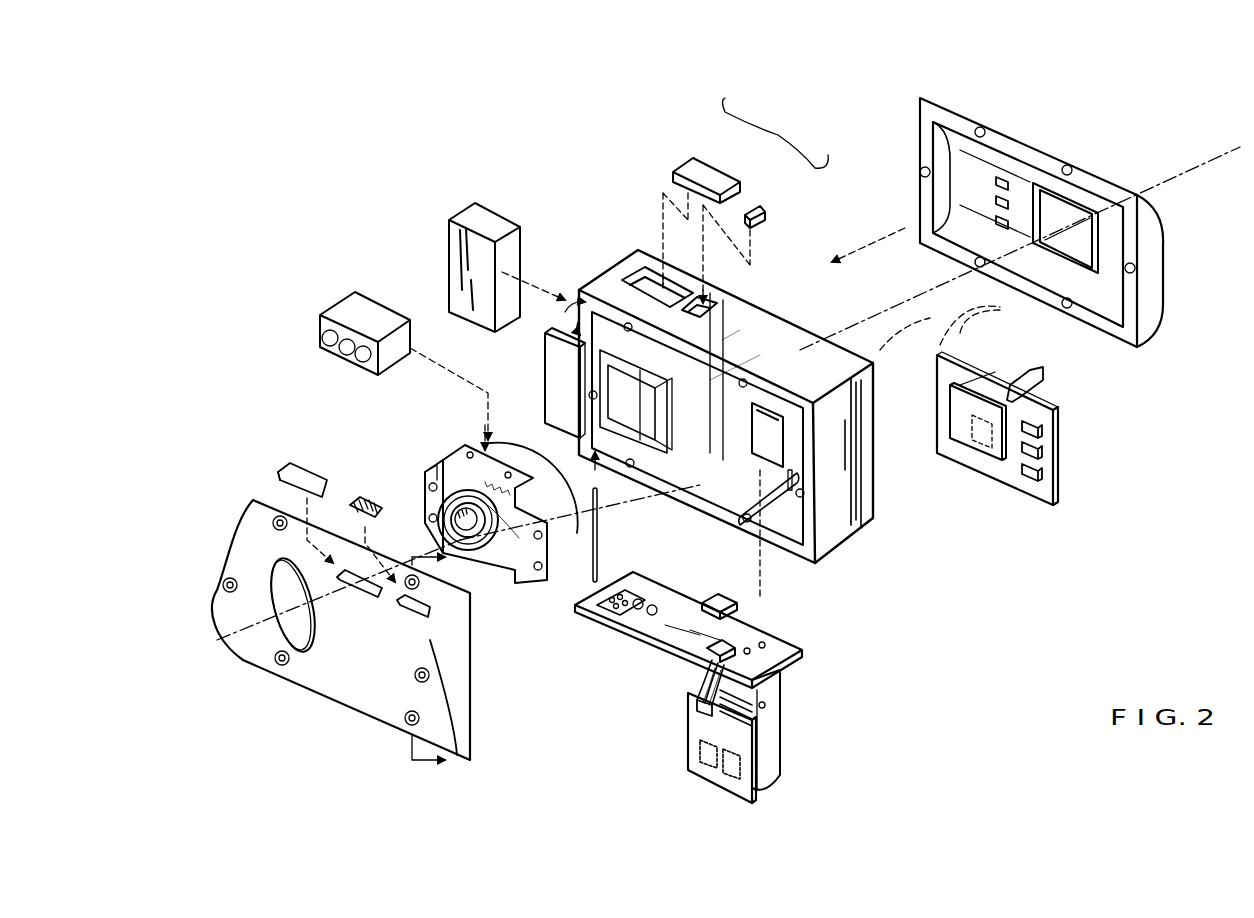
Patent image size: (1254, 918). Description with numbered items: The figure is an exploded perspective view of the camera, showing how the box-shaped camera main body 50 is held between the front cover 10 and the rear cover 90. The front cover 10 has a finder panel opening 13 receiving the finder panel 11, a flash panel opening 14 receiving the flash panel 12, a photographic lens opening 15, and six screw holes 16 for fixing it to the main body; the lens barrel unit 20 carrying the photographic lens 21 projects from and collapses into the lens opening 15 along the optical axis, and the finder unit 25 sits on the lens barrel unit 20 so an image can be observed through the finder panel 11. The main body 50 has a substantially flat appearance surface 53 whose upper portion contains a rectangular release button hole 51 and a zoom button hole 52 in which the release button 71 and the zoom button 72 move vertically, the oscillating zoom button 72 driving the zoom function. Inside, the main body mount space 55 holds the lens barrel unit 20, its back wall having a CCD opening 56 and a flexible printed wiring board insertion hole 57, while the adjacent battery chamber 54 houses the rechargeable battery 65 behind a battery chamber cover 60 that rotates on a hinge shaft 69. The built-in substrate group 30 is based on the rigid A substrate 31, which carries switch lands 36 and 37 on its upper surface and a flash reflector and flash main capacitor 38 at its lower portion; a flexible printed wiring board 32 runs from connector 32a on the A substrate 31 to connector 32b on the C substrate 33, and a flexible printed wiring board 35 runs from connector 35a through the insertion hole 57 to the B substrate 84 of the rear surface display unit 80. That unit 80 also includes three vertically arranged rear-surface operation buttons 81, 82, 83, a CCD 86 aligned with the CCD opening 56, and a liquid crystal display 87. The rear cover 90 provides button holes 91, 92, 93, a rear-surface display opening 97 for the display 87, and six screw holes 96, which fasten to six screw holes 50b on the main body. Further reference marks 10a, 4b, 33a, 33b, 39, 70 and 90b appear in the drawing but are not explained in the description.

The front cover 10 is at (345, 715).
The cover surface 10a is at (330, 678).
The finder panel 11 is at (287, 468).
The flash panel 12 is at (362, 495).
The finder panel opening 13 is at (360, 588).
The flash panel opening 14 is at (410, 605).
The photographic lens opening 15 is at (293, 580).
The screw holes 16 is at (278, 668).
The section line 4b is at (413, 671).
The lens barrel unit 20 is at (448, 458).
The photographic lens 21 is at (472, 530).
The finder unit 25 is at (362, 300).
The built-in substrate group 30 is at (815, 660).
The electric substrate (A substrate) 31 is at (780, 645).
The flexible printed wiring board 32 is at (712, 675).
The connector 32a is at (705, 652).
The connector 32b is at (698, 710).
The C substrate 33 is at (755, 780).
The chip 33a is at (723, 768).
The chip 33b is at (700, 752).
The flexible printed wiring board 35 is at (1035, 388).
The connector 35a is at (735, 600).
The switch land 36 is at (653, 605).
The switch land 37 is at (622, 592).
The flash reflector / flash main capacitor 38 is at (768, 710).
The battery holder 39 is at (770, 764).
The camera main body 50 is at (615, 268).
The screw holes 50b is at (747, 522).
The release button hole 51 is at (658, 275).
The zoom button hole 52 is at (725, 303).
The appearance surface 53 is at (850, 385).
The battery chamber 54 is at (640, 398).
The main body mount space 55 is at (752, 380).
The CCD opening 56 is at (770, 435).
The flexible printed wiring board insertion hole 57 is at (800, 370).
The battery chamber cover 60 is at (555, 383).
The battery 65 is at (488, 222).
The hinge shaft 69 is at (592, 575).
The switch unit 70 is at (776, 129).
The release button 71 is at (700, 165).
The zoom button 72 is at (780, 200).
The rear surface display unit 80 is at (975, 350).
The rear-surface operation button 81 is at (1044, 432).
The rear-surface operation button 82 is at (1044, 453).
The rear-surface operation button 83 is at (1044, 476).
The B substrate 84 is at (1010, 480).
The CCD 86 is at (985, 448).
The liquid crystal display 87 is at (1003, 385).
The rear cover 90 is at (1045, 130).
The recess 90b is at (960, 165).
The rear-surface operation button hole 91 is at (1005, 175).
The rear-surface operation button hole 92 is at (996, 200).
The rear-surface operation button hole 93 is at (996, 220).
The screw holes 96 is at (975, 264).
The rear-surface display opening 97 is at (1080, 215).